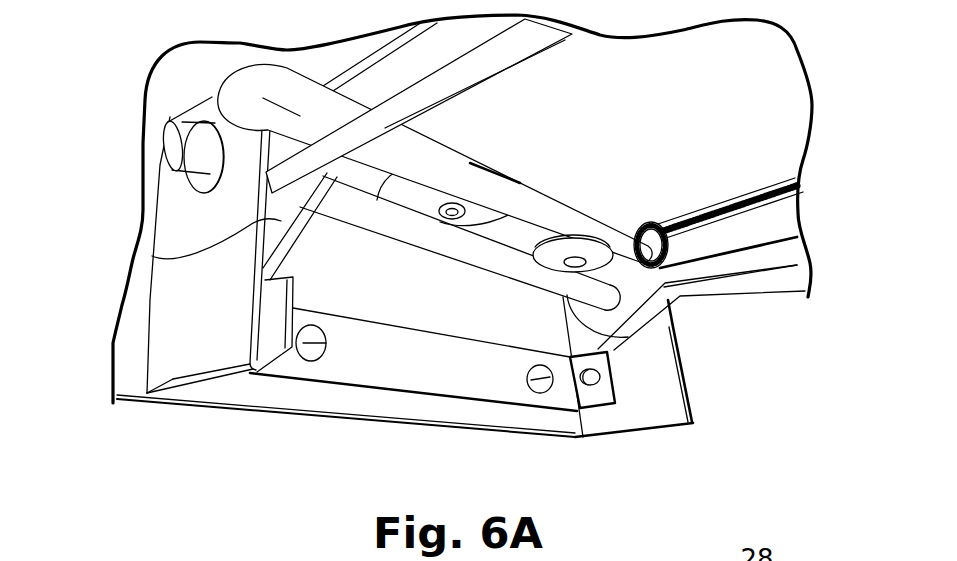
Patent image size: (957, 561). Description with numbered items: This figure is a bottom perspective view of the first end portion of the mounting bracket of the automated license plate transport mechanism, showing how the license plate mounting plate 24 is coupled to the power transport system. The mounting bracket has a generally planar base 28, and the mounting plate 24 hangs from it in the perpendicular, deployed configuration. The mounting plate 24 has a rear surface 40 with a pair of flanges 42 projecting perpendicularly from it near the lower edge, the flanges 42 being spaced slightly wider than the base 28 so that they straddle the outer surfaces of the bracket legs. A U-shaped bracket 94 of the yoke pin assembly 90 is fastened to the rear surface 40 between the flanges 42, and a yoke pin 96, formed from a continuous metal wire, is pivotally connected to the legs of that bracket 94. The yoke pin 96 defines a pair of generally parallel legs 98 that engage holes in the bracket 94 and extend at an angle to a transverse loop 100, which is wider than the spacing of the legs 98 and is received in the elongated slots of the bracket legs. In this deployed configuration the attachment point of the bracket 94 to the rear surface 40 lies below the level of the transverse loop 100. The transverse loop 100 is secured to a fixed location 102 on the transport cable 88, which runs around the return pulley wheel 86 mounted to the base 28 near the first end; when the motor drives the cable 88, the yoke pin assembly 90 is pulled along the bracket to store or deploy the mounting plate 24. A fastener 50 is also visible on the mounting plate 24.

The license plate mounting plate 24 is at (133, 323).
The base 28 is at (692, 112).
The rear surface 40 is at (373, 292).
The flanges 42 is at (197, 357).
The bolt 50 is at (163, 143).
The return pulley wheel 86 is at (557, 268).
The transport cable 88 is at (752, 192).
The yoke pin assembly 90 is at (678, 367).
The U-shaped bracket 94 is at (592, 393).
The yoke pin 96 is at (535, 197).
The legs 98 is at (157, 257).
The transverse loop 100 is at (595, 225).
The fixed location 102 is at (797, 242).